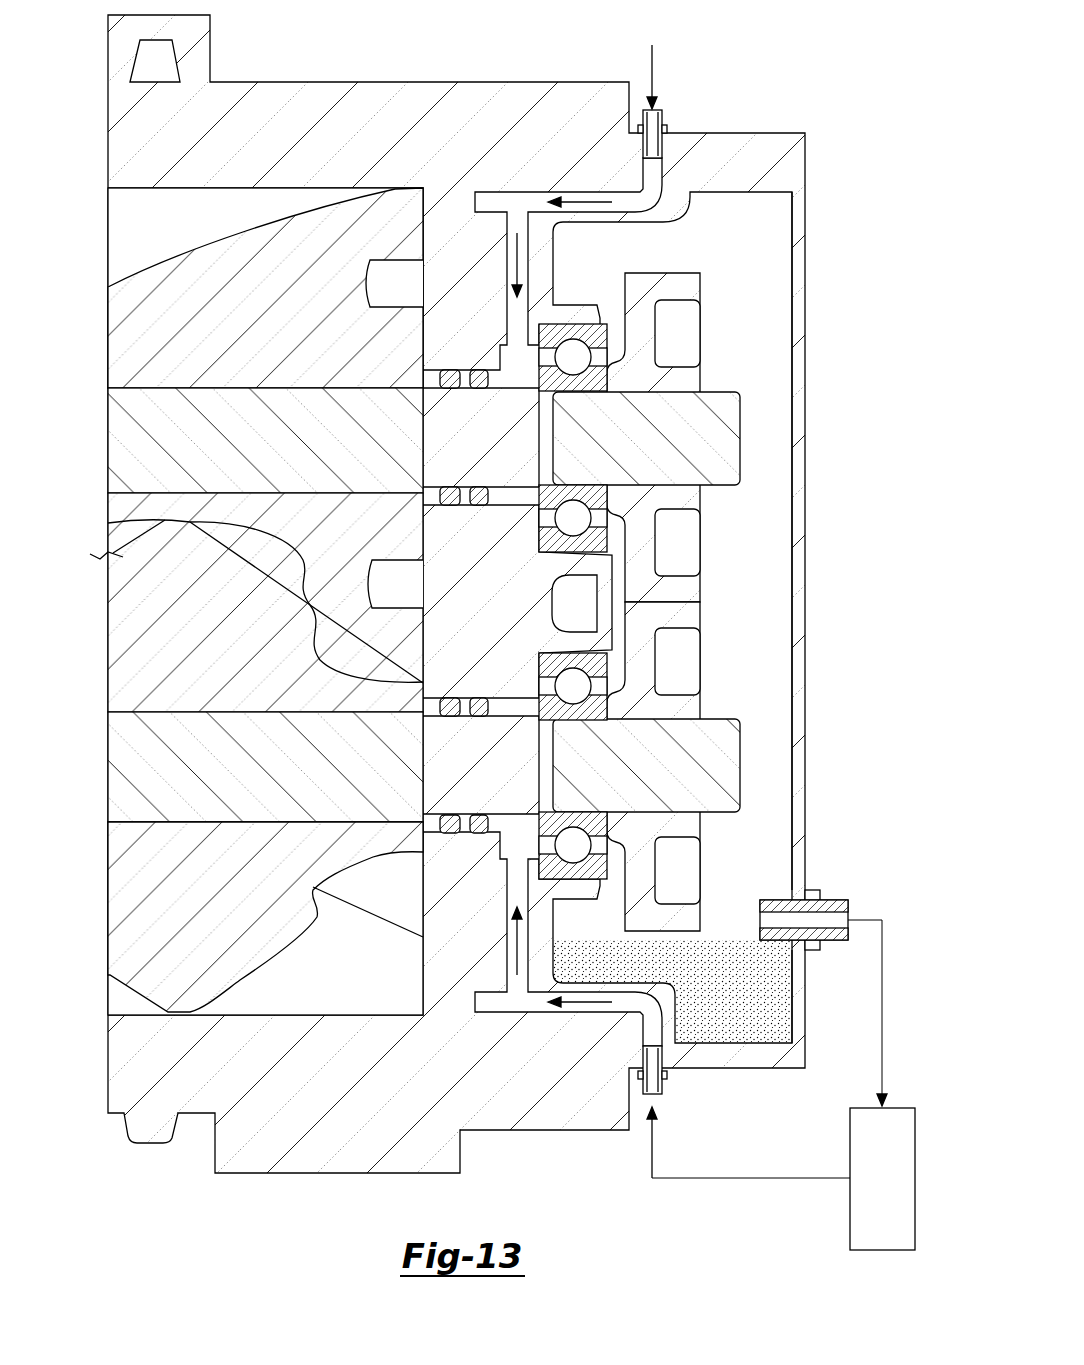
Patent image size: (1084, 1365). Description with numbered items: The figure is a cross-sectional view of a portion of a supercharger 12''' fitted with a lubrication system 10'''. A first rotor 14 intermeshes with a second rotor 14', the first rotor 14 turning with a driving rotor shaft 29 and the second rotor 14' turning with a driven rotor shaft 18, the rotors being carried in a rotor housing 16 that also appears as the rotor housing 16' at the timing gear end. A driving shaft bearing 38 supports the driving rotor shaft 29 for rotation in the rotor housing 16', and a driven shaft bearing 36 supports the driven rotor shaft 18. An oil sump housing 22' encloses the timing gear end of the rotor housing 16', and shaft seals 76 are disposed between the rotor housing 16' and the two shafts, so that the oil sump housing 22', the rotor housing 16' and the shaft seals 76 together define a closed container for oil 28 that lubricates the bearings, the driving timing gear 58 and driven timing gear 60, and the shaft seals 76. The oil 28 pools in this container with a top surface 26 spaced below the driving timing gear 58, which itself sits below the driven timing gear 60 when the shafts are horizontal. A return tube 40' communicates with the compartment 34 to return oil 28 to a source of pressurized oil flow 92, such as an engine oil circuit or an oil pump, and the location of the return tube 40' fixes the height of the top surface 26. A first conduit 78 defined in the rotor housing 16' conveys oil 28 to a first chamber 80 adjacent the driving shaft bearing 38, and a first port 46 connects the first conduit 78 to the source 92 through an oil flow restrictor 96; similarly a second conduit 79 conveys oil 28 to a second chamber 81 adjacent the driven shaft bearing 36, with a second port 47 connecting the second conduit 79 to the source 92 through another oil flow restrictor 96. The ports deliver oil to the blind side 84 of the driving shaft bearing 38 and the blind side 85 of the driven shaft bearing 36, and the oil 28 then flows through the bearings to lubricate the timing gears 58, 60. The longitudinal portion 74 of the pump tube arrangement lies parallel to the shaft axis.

The lubrication system 10''' is at (722, 1247).
The supercharger 12''' is at (150, 1190).
The first rotor 14 is at (236, 942).
The second rotor 14' is at (248, 288).
The rotor housing 16 is at (456, 637).
The rotor housing 16' is at (841, 210).
The driven rotor shaft 18 is at (118, 453).
The oil sump housing 22' is at (835, 617).
The top surface 26 is at (748, 928).
The oil 28 is at (758, 1023).
The driving rotor shaft 29 is at (118, 752).
The compartment 34 is at (755, 292).
The driven shaft bearing 36 is at (580, 326).
The driving shaft bearing 38 is at (580, 878).
The return tube 40' is at (823, 933).
The first port 46 is at (655, 1024).
The second port 47 is at (654, 179).
The driving timing gear 58 is at (680, 940).
The driven timing gear 60 is at (678, 272).
The longitudinal portion 74 is at (450, 485).
The shaft seals 76 is at (450, 507).
The first conduit 78 is at (525, 1016).
The second conduit 79 is at (525, 192).
The first chamber 80 is at (536, 831).
The second chamber 81 is at (534, 372).
The blind side 84 is at (538, 868).
The blind side 85 is at (538, 331).
The source of pressurized oil flow 92 is at (885, 1252).
The oil flow restrictor 96 is at (656, 107).